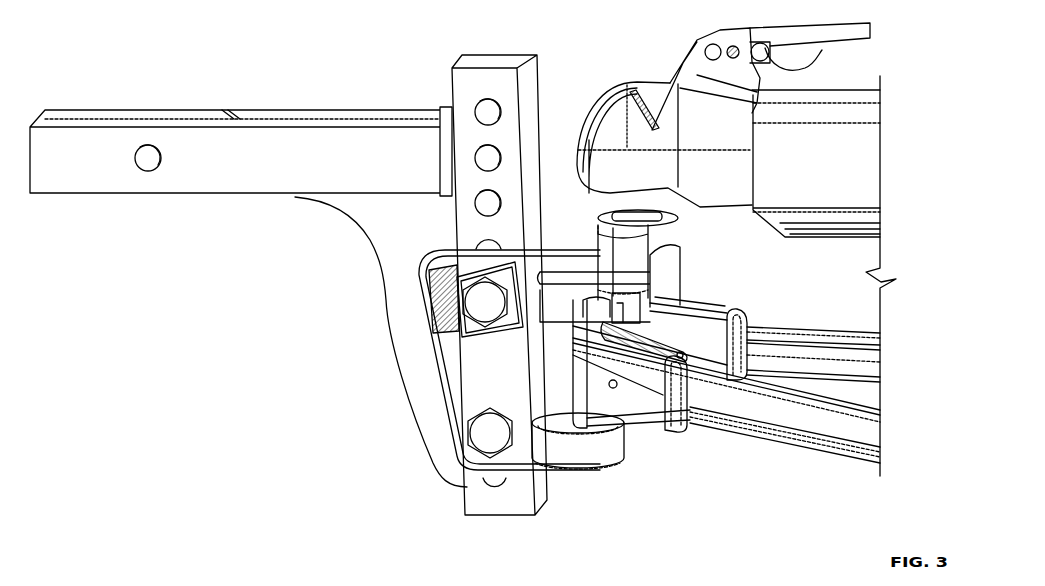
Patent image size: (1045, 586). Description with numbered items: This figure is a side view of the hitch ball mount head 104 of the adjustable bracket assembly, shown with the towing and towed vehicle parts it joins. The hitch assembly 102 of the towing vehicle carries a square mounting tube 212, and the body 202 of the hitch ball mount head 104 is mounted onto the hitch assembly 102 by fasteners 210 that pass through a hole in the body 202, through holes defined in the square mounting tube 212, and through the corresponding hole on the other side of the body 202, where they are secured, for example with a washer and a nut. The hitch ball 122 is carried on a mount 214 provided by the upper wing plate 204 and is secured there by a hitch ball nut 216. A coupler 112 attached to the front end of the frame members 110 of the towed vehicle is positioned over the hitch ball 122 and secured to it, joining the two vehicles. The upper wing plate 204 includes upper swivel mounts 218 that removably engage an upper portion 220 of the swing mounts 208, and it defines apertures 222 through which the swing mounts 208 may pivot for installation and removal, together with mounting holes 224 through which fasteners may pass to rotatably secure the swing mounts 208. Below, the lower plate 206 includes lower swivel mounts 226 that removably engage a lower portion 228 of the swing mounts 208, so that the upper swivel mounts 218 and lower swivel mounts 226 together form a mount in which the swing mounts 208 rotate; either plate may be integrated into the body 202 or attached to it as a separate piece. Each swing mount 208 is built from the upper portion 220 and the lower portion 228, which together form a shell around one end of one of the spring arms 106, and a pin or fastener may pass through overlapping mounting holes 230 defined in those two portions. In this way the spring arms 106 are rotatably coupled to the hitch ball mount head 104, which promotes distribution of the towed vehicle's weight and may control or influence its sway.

The hitch assembly 102 is at (182, 110).
The hitch ball mount head 104 is at (598, 525).
The spring arms 106 is at (787, 326).
The frame members 110 is at (820, 245).
The coupler 112 is at (610, 92).
The hitch ball 122 is at (598, 219).
The body 202 is at (447, 357).
The upper wing plate 204 is at (547, 313).
The lower plate 206 is at (610, 473).
The swing mounts 208 is at (737, 310).
The fasteners 210 is at (478, 317).
The square mounting tube 212 is at (530, 56).
The mount 214 is at (690, 225).
The hitch ball nut 216 is at (674, 283).
The upper swivel mounts 218 is at (640, 332).
The upper portion 220 is at (700, 296).
The apertures 222 is at (620, 300).
The mounting holes 224 is at (600, 306).
The lower swivel mounts 226 is at (597, 473).
The lower portion 228 is at (790, 389).
The mounting holes 230 is at (614, 389).